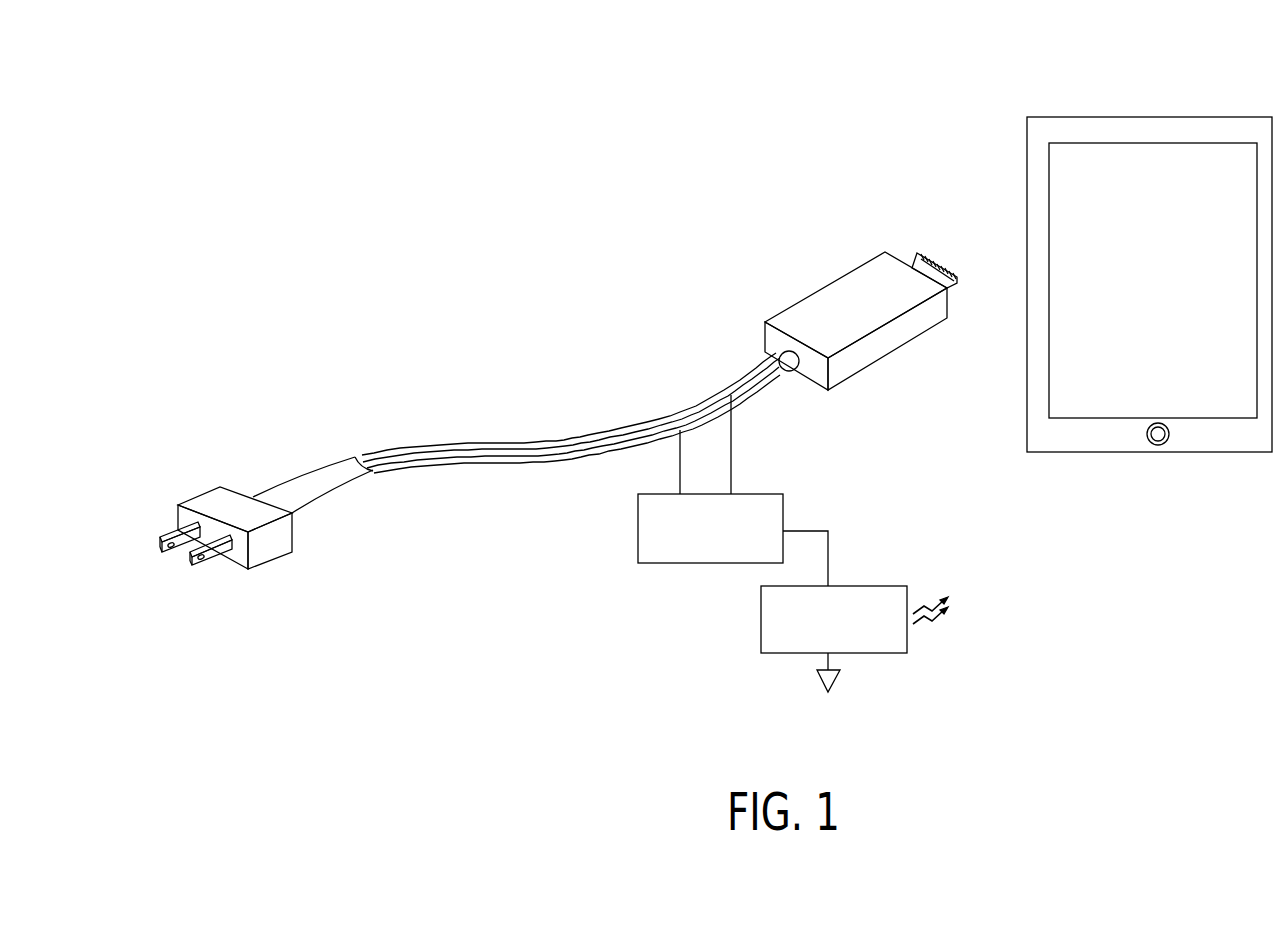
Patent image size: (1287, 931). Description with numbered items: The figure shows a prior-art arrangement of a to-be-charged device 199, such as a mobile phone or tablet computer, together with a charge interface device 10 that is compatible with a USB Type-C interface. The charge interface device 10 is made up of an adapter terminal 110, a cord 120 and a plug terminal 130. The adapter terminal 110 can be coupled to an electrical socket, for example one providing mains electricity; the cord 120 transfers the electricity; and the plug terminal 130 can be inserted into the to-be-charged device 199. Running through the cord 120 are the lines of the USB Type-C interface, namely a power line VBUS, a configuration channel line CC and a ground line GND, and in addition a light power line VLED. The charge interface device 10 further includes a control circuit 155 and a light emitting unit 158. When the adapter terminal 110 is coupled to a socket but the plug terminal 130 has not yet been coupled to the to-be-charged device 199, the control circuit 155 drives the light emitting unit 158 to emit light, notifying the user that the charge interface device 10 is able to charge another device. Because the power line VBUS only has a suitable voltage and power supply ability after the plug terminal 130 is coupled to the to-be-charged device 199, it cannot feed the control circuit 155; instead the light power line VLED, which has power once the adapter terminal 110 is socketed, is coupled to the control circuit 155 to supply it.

The charge interface device 10 is at (561, 168).
The adapter terminal 110 is at (205, 492).
The cord 120 is at (293, 478).
The plug terminal 130 is at (818, 292).
The control circuit 155 is at (732, 543).
The light emitting unit 158 is at (856, 634).
The to-be-charged device 199 is at (1213, 117).
The power line VBUS is at (391, 449).
The configuration channel line CC is at (419, 446).
The light power line VLED is at (402, 460).
The ground line GND is at (488, 461).